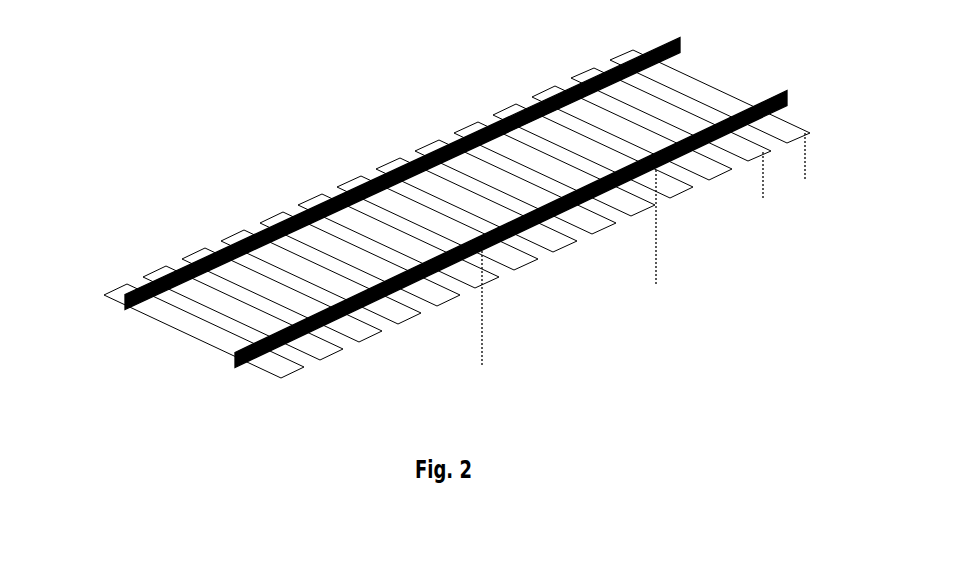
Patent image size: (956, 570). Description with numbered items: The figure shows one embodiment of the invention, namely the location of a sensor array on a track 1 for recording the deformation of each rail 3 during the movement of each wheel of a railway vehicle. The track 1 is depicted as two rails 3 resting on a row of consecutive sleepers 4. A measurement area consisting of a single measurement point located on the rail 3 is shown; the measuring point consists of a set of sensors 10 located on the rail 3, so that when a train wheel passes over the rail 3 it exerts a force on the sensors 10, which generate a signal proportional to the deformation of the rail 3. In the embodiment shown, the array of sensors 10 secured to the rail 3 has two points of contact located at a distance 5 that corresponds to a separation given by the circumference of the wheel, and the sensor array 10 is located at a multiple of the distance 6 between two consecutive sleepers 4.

The track 1 is at (438, 220).
The rail 3 is at (197, 270).
The sleepers 4 is at (720, 87).
The distance 5 is at (655, 283).
The distance between two consecutive sleepers 6 is at (804, 181).
The sensors 10 is at (545, 104).